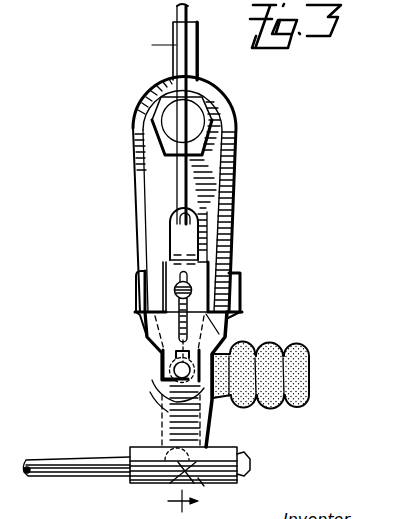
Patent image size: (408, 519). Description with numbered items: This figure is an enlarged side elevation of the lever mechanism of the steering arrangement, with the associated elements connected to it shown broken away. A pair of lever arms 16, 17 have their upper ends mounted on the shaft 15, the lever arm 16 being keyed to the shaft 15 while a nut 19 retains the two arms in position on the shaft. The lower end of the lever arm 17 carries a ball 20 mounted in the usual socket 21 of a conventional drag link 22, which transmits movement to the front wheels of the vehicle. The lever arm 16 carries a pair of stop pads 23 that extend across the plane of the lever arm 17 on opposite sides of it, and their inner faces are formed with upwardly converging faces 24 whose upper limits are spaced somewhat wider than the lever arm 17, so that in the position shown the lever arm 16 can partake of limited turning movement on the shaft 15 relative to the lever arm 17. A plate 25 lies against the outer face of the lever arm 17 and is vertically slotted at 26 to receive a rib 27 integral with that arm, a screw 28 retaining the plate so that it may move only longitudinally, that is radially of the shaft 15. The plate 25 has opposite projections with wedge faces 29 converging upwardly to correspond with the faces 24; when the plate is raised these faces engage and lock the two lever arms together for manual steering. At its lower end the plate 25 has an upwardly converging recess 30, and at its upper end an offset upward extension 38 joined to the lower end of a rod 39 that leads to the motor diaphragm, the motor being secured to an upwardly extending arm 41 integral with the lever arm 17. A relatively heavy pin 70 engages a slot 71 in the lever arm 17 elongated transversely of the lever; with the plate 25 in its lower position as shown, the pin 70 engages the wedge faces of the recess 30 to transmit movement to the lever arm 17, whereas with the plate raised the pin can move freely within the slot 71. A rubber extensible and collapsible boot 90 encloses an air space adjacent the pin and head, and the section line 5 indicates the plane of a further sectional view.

The section line 5 is at (166, 278).
The shaft 15 is at (198, 111).
The lever arm 16 is at (236, 182).
The lever arm 17 is at (237, 152).
The nut 19 is at (235, 113).
The ball 20 is at (211, 492).
The socket 21 is at (216, 456).
The drag link 22 is at (62, 459).
The stop pads 23 is at (136, 284).
The converging faces 24 is at (150, 298).
The plate 25 is at (172, 318).
The slot 26 is at (170, 342).
The rib 27 is at (178, 296).
The screw 28 is at (178, 284).
The wedge faces 29 is at (142, 330).
The recess 30 is at (152, 381).
The upward extension 38 is at (199, 222).
The rod 39 is at (190, 12).
The upwardly extending arm 41 is at (200, 64).
The pin 70 is at (178, 374).
The slot 71 is at (182, 380).
The boot 90 is at (292, 350).